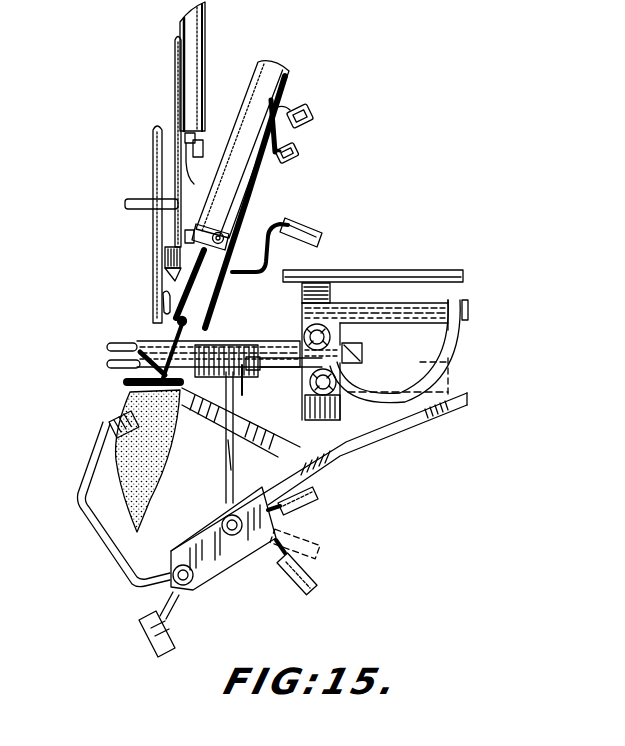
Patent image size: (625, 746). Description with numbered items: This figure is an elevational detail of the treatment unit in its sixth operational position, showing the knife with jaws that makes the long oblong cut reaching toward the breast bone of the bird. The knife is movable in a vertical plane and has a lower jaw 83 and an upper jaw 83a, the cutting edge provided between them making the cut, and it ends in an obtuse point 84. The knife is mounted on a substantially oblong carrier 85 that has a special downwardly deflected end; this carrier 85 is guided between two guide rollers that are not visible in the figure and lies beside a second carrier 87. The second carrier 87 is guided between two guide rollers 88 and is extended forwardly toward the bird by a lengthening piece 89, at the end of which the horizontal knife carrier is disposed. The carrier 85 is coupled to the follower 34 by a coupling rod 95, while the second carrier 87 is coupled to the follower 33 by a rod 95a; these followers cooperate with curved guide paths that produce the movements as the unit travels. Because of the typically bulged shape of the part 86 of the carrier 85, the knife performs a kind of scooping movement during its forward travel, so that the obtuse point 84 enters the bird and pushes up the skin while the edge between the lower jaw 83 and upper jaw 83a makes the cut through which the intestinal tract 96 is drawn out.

The follower 33 is at (318, 496).
The follower 34 is at (291, 585).
The lower jaw 83 is at (123, 374).
The upper jaw 83a is at (112, 340).
The obtuse point 84 is at (108, 360).
The carrier 85 is at (220, 342).
The bulged part 86 is at (364, 352).
The second carrier 87 is at (458, 332).
The guide rollers 88 is at (322, 328).
The lengthening piece 89 is at (242, 374).
The coupling rod 95 is at (226, 468).
The rod 95a is at (258, 472).
The intestinal tract 96 is at (150, 340).